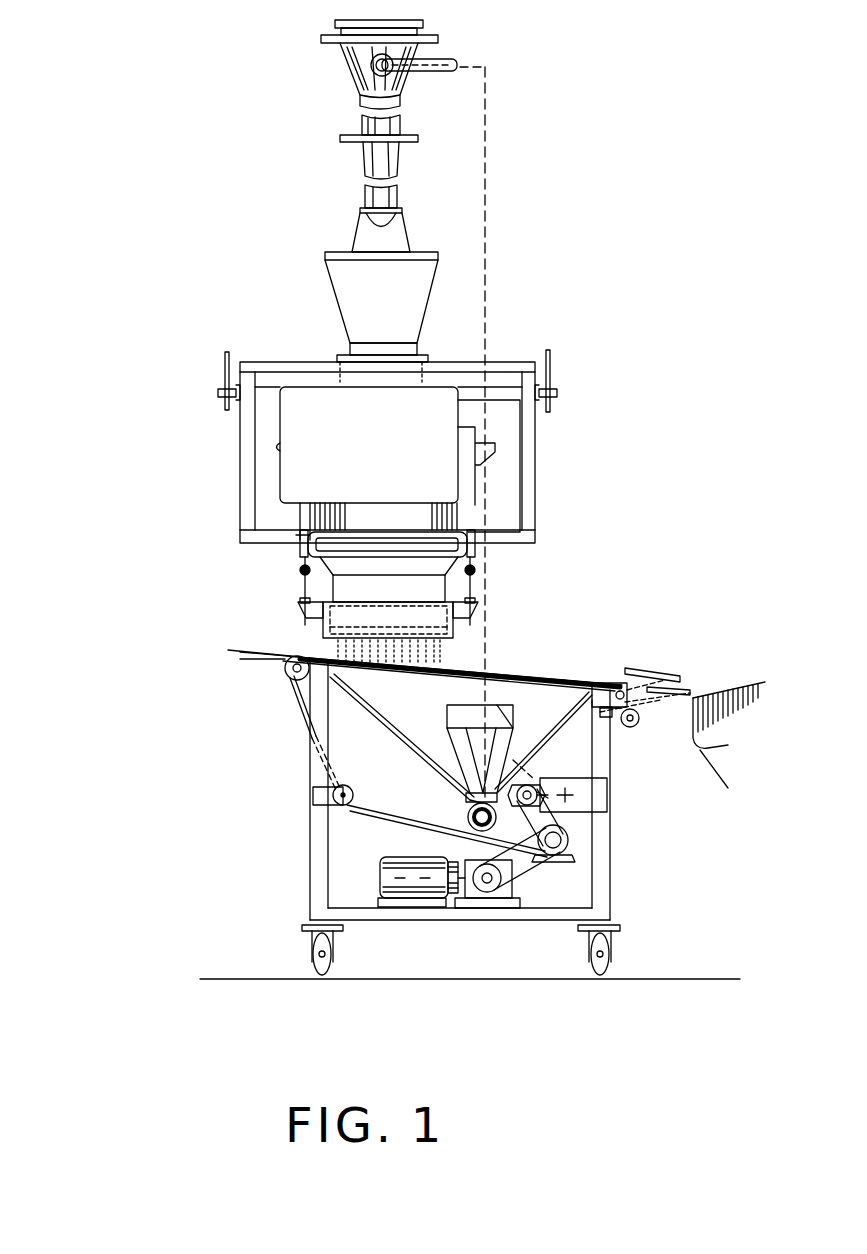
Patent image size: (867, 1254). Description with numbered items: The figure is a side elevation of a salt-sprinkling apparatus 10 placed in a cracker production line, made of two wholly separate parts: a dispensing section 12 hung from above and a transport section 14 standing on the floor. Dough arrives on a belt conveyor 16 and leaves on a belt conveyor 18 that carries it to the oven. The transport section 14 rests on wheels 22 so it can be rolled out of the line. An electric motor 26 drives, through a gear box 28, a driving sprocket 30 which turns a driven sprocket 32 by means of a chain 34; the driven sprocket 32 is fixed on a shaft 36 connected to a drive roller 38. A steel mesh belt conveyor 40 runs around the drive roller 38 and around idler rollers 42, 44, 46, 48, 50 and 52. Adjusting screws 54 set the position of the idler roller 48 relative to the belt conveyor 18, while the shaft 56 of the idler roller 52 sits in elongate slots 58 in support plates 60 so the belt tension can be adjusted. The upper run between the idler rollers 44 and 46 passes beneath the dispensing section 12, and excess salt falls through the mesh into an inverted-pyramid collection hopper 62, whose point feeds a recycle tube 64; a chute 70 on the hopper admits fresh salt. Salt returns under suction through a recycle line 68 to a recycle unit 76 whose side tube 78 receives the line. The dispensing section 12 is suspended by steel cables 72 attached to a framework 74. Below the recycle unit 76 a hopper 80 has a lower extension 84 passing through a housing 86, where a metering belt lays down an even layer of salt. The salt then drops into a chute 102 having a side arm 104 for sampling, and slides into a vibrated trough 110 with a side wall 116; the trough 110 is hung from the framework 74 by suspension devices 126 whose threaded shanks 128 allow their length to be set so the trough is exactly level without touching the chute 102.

The apparatus 10 is at (148, 581).
The dispensing section 12 is at (294, 243).
The transport section 14 is at (244, 834).
The belt conveyor 16 is at (248, 652).
The belt conveyor 18 is at (745, 697).
The wheels 22 is at (310, 948).
The electric motor 26 is at (415, 887).
The gear box 28 is at (472, 856).
The driving sprocket 30 is at (487, 888).
The driven sprocket 32 is at (555, 860).
The chain 34 is at (518, 880).
The shaft 36 is at (570, 843).
The drive roller 38 is at (538, 827).
The belt conveyor 40 is at (385, 822).
The idler roller 42 is at (335, 782).
The idler roller 44 is at (283, 676).
The idler roller 46 is at (583, 659).
The idler roller 48 is at (700, 745).
The idler roller 50 is at (633, 728).
The idler roller 52 is at (539, 774).
The adjusting screws 54 is at (658, 670).
The shaft 56 is at (548, 786).
The elongate slots 58 is at (560, 812).
The support plates 60 is at (595, 795).
The collection hopper 62 is at (402, 723).
The recycle tube 64 is at (462, 805).
The recycle line 68 is at (485, 272).
The chute 70 is at (460, 757).
The steel cables 72 is at (225, 360).
The framework 74 is at (535, 465).
The recycle unit 76 is at (354, 136).
The side tube 78 is at (392, 73).
The hopper 80 is at (358, 298).
The lower extension 84 is at (408, 370).
The housing 86 is at (352, 446).
The chute 102 is at (368, 602).
The side arm 104 is at (478, 553).
The trough 110 is at (457, 632).
The side wall 116 is at (330, 630).
The suspension devices 126 is at (300, 557).
The threaded shank 128 is at (300, 588).